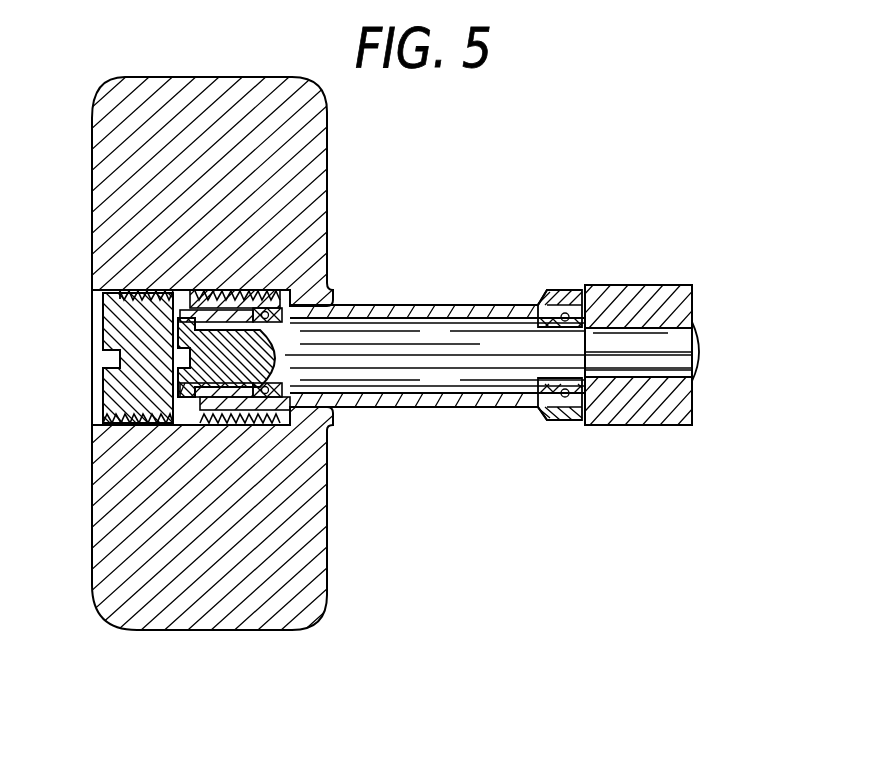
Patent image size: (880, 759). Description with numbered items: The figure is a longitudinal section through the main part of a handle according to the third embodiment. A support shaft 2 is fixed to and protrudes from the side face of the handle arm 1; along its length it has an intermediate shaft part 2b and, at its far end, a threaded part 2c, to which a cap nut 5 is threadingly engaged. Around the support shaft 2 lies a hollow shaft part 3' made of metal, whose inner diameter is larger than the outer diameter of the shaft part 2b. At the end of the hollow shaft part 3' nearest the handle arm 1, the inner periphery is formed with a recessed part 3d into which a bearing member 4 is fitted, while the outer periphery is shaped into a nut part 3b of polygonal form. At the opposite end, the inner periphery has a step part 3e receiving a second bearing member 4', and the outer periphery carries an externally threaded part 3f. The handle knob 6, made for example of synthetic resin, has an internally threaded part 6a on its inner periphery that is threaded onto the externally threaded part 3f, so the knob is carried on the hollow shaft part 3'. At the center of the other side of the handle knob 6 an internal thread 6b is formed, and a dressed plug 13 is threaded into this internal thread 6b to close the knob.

The handle arm 1 is at (652, 285).
The support shaft 2 is at (412, 322).
The shaft part 2b is at (373, 342).
The threaded part 2c is at (172, 425).
The hollow shaft part 3' is at (437, 321).
The nut part 3b is at (559, 288).
The recessed part 3d is at (556, 398).
The step part 3e is at (270, 424).
The externally threaded part 3f is at (240, 296).
The bearing member 4 is at (569, 403).
The bearing member 4' is at (310, 435).
The cap nut 5 is at (193, 338).
The handle knob 6 is at (330, 127).
The internally threaded part 6a is at (193, 293).
The internal thread 6b is at (106, 291).
The dressed plug 13 is at (103, 385).